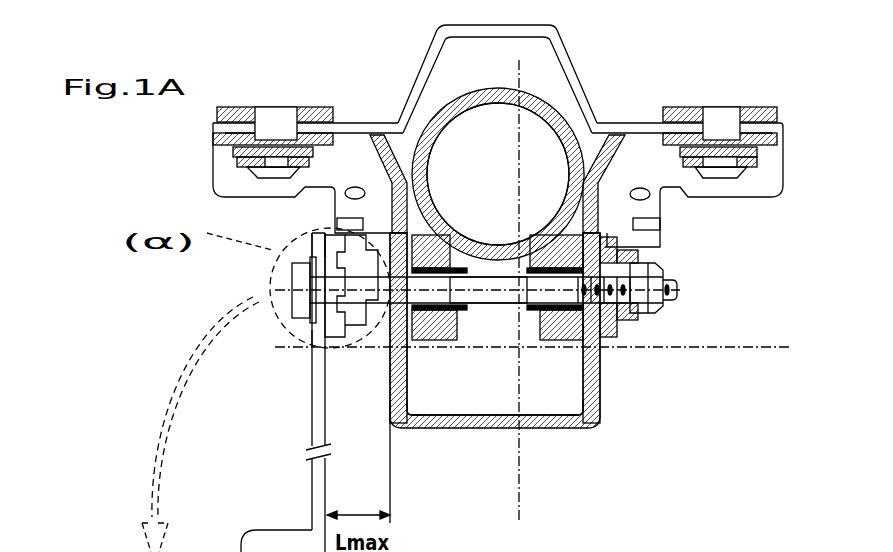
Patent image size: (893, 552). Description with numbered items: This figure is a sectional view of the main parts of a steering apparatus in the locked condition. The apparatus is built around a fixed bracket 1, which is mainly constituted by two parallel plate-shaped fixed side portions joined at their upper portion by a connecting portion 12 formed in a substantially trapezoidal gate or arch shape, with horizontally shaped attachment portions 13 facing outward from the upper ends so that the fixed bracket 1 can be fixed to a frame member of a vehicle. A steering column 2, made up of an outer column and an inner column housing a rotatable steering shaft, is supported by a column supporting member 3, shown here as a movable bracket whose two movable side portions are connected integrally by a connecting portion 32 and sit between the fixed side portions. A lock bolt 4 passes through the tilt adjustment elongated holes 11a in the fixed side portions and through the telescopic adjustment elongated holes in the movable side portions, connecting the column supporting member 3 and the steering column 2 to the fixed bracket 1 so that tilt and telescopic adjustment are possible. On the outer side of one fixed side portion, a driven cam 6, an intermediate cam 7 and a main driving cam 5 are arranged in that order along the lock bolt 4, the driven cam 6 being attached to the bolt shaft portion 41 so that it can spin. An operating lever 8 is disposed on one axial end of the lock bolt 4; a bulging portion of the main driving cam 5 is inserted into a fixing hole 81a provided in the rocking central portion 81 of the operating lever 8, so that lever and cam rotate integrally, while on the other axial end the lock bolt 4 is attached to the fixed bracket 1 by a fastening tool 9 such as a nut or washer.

The fixed bracket 1 is at (498, 138).
The connecting portion 12 is at (562, 46).
The attachment portion 13 is at (355, 128).
The steering column 2 is at (503, 88).
The bolt shaft portion 41 is at (657, 248).
The column supporting member 3 is at (532, 360).
The connecting portion 32 is at (560, 428).
The tilt adjustment elongated hole 11a is at (640, 323).
The lock bolt 4 is at (500, 310).
The fastening tool 9 is at (653, 313).
The main driving cam 5 is at (329, 349).
The driven cam 6 is at (381, 349).
The intermediate cam 7 is at (357, 349).
The operating lever 8 is at (279, 382).
The rocking central portion 81 is at (312, 243).
The fixing hole 81a is at (305, 343).